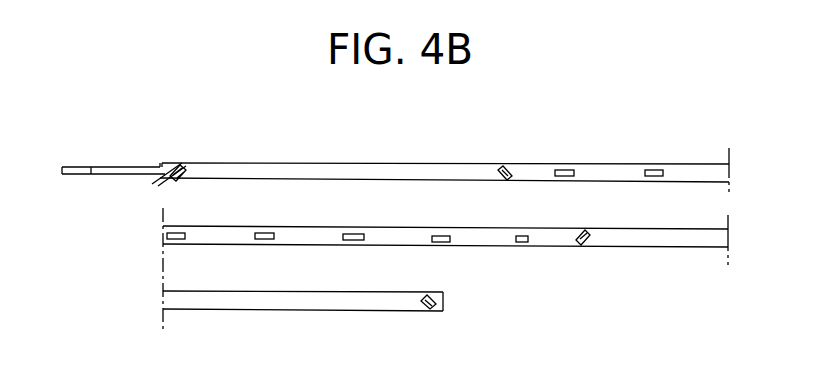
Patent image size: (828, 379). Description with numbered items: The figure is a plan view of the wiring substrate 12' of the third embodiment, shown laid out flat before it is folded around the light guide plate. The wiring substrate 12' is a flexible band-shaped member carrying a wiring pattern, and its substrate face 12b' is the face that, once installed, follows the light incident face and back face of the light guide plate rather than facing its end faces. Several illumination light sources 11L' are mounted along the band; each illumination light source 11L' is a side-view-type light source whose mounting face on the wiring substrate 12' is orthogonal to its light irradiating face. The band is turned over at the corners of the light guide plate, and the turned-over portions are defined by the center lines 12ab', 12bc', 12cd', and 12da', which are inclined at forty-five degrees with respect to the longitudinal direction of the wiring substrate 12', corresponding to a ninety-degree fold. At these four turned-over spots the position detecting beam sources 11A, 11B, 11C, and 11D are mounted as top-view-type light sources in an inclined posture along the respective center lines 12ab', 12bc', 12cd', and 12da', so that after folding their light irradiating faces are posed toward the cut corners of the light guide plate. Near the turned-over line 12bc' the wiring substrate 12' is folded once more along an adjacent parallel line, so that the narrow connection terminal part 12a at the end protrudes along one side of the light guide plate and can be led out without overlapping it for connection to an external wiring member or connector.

The wiring substrate 12' is at (403, 239).
The connection terminal part 12a is at (68, 176).
The center line of turned-over portion 12ab' is at (444, 190).
The turned-over line 12bc' is at (142, 153).
The substrate face 12b' is at (445, 254).
The center line of turned-over portion 12cd' is at (353, 312).
The center line of turned-over portion 12da' is at (610, 271).
The position detecting beam source 11A is at (506, 182).
The position detecting beam source 11B is at (183, 172).
The position detecting beam source 11C is at (426, 310).
The position detecting beam source 11D is at (596, 223).
The illumination light source 11L' is at (564, 226).